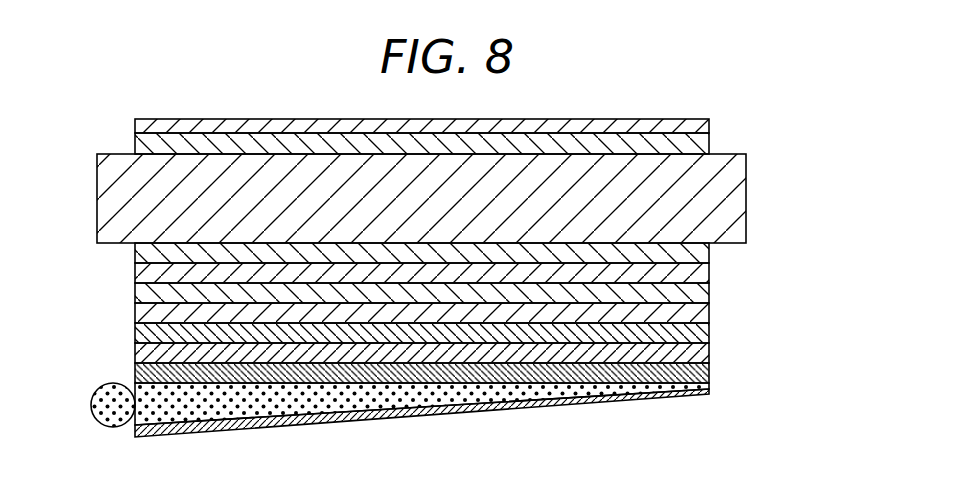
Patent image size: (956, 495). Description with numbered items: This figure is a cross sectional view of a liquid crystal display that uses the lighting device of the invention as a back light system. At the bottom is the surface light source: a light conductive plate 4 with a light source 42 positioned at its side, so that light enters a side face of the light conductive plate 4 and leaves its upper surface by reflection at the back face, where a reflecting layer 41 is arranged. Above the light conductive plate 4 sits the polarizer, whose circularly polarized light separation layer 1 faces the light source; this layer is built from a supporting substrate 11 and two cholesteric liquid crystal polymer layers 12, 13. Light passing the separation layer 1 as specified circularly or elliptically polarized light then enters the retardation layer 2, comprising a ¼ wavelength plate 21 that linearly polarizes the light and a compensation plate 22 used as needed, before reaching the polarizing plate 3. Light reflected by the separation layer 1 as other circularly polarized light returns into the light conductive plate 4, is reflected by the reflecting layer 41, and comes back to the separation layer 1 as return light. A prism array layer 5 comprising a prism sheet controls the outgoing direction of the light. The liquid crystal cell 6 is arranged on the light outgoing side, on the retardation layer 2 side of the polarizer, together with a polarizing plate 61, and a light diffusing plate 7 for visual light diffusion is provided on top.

The circularly polarized light separation layer 1 is at (488, 372).
The supporting substrate 11 is at (773, 347).
The cholesteric liquid crystal polymer layer 12 is at (709, 362).
The cholesteric liquid crystal polymer layer 13 is at (709, 338).
The retardation layer 2 is at (488, 309).
The ¼ wavelength plate 21 is at (709, 318).
The compensation plate 22 is at (709, 291).
The polarizing plate 3 is at (709, 258).
The light conductive plate 4 is at (163, 392).
The reflecting layer 41 is at (590, 403).
The light source 42 is at (103, 398).
The prism array layer 5 is at (709, 278).
The liquid crystal cell 6 is at (746, 200).
The polarizing plate 61 is at (709, 141).
The light diffusing plate 7 is at (709, 126).